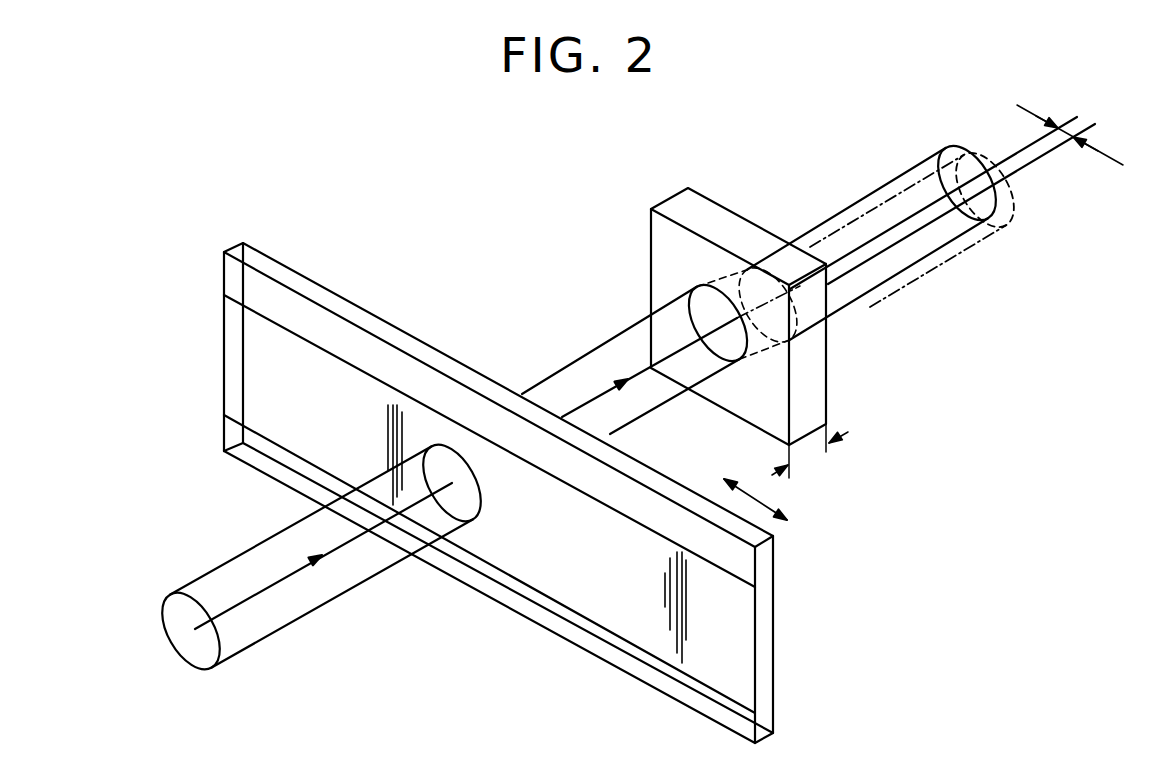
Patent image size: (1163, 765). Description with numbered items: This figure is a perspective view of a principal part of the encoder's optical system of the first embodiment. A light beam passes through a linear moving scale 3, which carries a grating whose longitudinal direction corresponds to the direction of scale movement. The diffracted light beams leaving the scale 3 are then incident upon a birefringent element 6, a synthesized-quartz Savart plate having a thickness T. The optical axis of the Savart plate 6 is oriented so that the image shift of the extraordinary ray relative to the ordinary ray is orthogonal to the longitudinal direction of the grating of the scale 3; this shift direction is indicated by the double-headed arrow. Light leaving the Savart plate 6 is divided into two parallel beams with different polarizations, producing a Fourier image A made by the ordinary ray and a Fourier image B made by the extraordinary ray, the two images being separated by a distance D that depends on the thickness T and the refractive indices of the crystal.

The moving scale 3 is at (763, 640).
The birefringent element 6 is at (810, 410).
The Fourier image A is at (952, 160).
The Fourier image B is at (1010, 206).
The distance D is at (1085, 144).
The thickness T is at (810, 451).